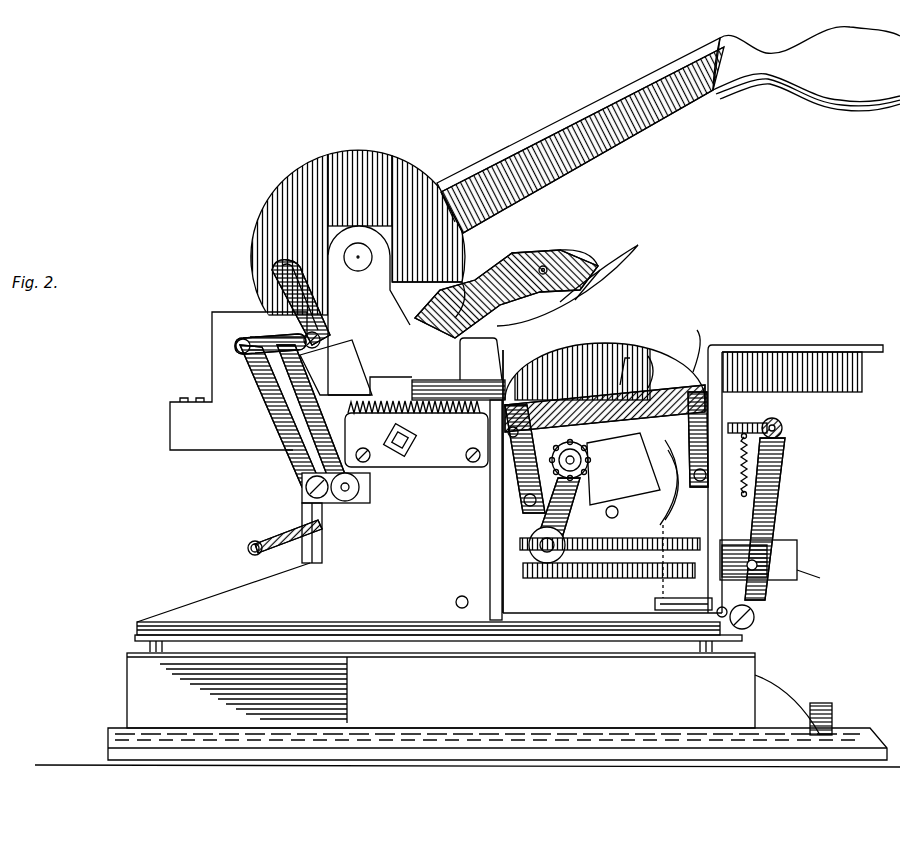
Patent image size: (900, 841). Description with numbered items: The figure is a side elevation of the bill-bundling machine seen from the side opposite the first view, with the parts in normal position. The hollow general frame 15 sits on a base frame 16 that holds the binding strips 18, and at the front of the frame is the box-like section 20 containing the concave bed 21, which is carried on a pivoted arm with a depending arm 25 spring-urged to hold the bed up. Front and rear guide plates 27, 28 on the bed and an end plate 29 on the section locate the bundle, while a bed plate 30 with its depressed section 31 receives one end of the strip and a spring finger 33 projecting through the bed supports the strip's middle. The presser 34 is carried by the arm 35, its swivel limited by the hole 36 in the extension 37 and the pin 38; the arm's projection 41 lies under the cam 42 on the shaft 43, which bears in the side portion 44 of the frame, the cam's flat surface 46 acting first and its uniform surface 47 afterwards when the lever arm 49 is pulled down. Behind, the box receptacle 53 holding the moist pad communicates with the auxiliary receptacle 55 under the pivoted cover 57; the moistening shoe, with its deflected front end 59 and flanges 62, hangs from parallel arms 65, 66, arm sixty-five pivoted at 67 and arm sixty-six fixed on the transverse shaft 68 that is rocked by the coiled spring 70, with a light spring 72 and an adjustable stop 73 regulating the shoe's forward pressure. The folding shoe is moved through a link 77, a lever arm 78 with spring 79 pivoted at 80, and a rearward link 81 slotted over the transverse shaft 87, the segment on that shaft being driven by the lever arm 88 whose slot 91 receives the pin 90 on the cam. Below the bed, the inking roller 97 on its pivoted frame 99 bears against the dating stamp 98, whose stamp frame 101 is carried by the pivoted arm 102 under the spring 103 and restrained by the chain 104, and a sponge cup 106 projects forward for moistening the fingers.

The general frame 15 is at (438, 607).
The base frame 16 is at (497, 706).
The binding strip 18 is at (816, 700).
The box-like section 20 is at (533, 481).
The bed 21 is at (590, 425).
The depending arm 25 is at (612, 578).
The front guide plate 27 is at (697, 332).
The rear guide plate 28 is at (507, 362).
The end guide plate 29 is at (622, 345).
The bed plate 30 is at (850, 345).
The depressed section 31 is at (845, 390).
The spring finger 33 is at (639, 371).
The presser 34 is at (625, 266).
The arm 35 is at (540, 255).
The hole 36 is at (575, 258).
The extension 37 is at (598, 266).
The pin 38 is at (556, 271).
The projection 41 is at (470, 262).
The cam 42 is at (405, 160).
The shaft 43 is at (358, 265).
The side portion 44 is at (370, 310).
The flat surface 46 is at (495, 230).
The uniform surface 47 is at (450, 178).
The lever arm 49 is at (632, 89).
The box receptacle 53 is at (212, 318).
The auxiliary receptacle 55 is at (170, 432).
The pivoted cover 57 is at (178, 400).
The deflected front end 59 is at (340, 372).
The flanges 62 is at (236, 345).
The arm 65 is at (243, 360).
The arm 66 is at (282, 370).
The screw stud pivot 67 is at (305, 487).
The transverse shaft 68 is at (362, 487).
The coiled spring 70 is at (288, 532).
The light spring 72 is at (390, 418).
The adjustable stop 73 is at (421, 440).
The link 77 is at (760, 423).
The lever arm 78 is at (772, 490).
The spring 79 is at (760, 452).
The pivot 80 is at (790, 562).
The link 81 is at (755, 617).
The transverse shaft 87 is at (458, 598).
The lever arm 88 is at (272, 283).
The pin 90 is at (320, 336).
The slot 91 is at (272, 270).
The inking roller 97 is at (588, 456).
The dating stamp 98 is at (569, 511).
The pivoted frame 99 is at (559, 538).
The stamp frame 101 is at (623, 469).
The pivoted arm 102 is at (625, 518).
The spring 103 is at (668, 512).
The chain 104 is at (655, 600).
The sponge cup 106 is at (820, 581).